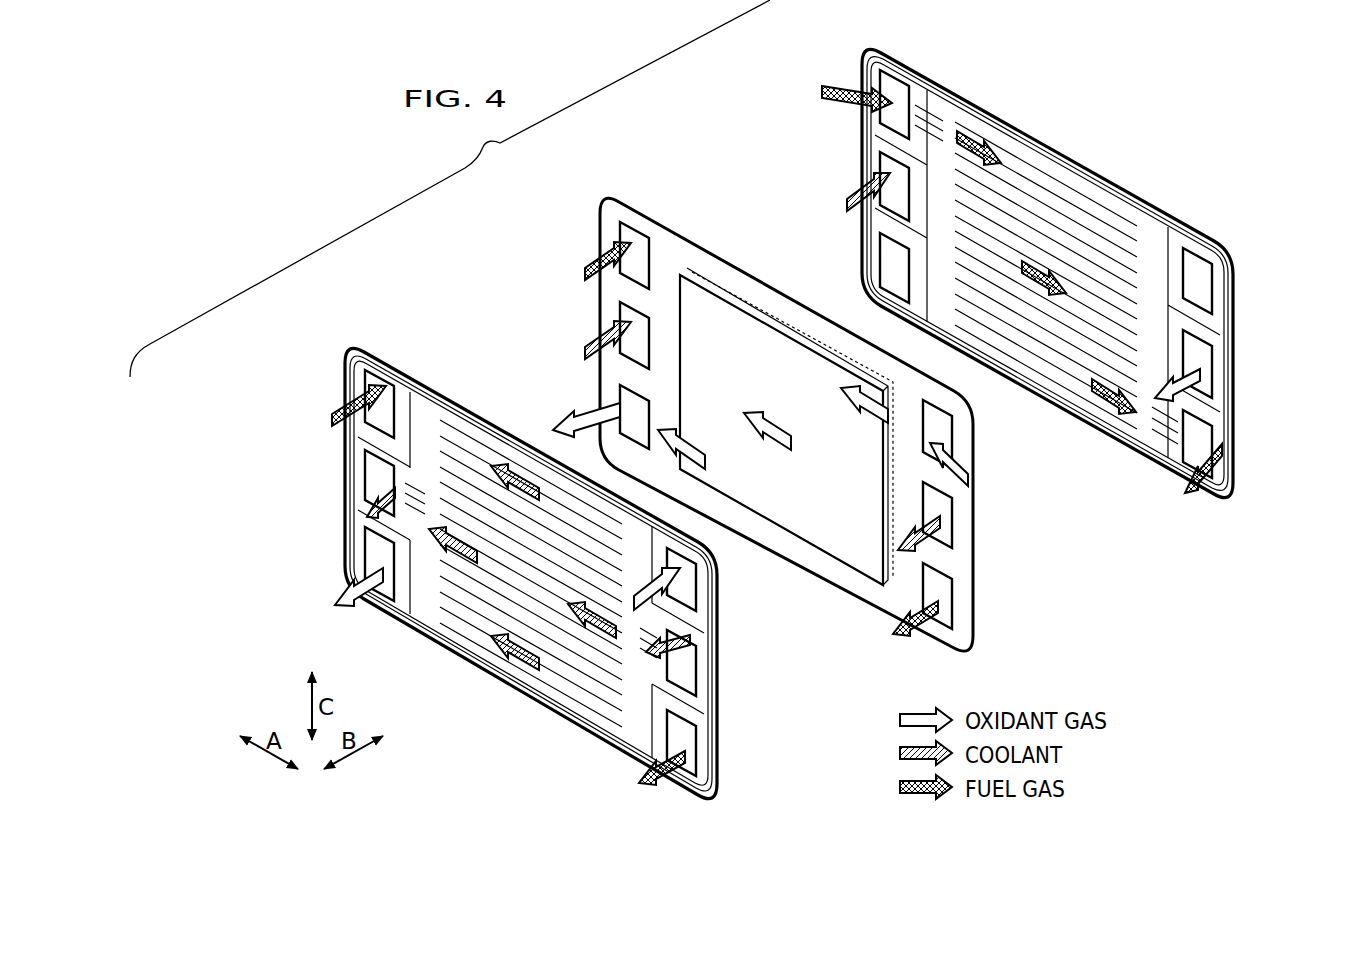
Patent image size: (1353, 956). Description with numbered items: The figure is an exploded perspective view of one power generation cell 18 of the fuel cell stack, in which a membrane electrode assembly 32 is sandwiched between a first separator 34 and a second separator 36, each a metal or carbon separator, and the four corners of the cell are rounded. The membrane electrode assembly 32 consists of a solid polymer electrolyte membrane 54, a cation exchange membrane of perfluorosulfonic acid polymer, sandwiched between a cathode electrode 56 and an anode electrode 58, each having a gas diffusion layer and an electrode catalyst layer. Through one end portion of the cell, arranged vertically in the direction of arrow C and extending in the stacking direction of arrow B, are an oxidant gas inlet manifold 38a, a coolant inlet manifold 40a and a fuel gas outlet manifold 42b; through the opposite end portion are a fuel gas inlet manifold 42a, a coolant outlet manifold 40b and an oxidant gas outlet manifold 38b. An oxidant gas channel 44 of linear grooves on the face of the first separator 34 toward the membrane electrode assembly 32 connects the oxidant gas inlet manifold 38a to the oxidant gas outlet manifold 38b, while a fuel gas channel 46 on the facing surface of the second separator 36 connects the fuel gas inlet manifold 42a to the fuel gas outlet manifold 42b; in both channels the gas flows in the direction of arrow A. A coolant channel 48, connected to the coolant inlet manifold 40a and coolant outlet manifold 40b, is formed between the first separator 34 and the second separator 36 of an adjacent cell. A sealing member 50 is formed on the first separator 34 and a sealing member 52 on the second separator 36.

The power generation cell 18 is at (450, 227).
The membrane electrode assembly 32 is at (756, 412).
The first separator 34 is at (345, 350).
The second separator 36 is at (860, 60).
The oxidant gas inlet manifold 38a is at (690, 604).
The oxidant gas outlet manifold 38b is at (370, 553).
The coolant inlet manifold 40a is at (690, 678).
The coolant outlet manifold 40b is at (370, 470).
The fuel gas inlet manifold 42a is at (370, 380).
The fuel gas outlet manifold 42b is at (690, 750).
The oxidant gas channel 44 is at (555, 640).
The fuel gas channel 46 is at (1075, 372).
The coolant channel 48 is at (465, 620).
The sealing member 50 is at (418, 388).
The sealing member 52 is at (1075, 170).
The solid polymer electrolyte membrane 54 is at (690, 255).
The cathode electrode 56 is at (722, 320).
The anode electrode 58 is at (758, 300).